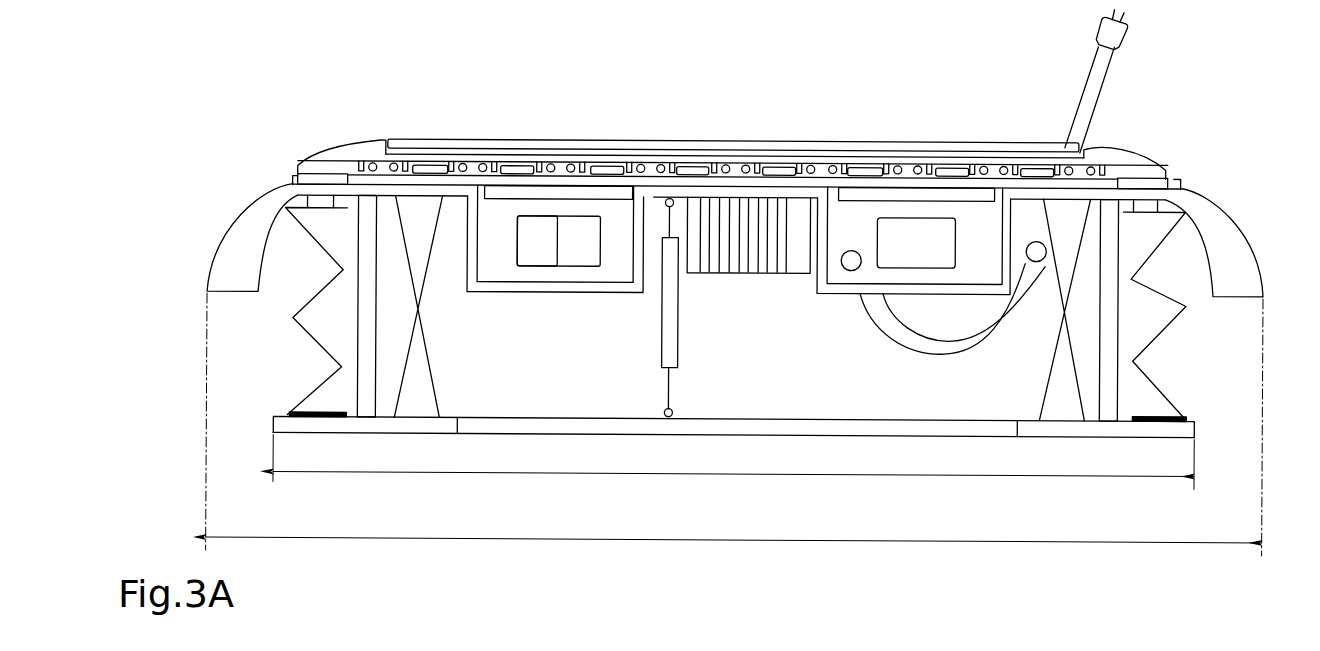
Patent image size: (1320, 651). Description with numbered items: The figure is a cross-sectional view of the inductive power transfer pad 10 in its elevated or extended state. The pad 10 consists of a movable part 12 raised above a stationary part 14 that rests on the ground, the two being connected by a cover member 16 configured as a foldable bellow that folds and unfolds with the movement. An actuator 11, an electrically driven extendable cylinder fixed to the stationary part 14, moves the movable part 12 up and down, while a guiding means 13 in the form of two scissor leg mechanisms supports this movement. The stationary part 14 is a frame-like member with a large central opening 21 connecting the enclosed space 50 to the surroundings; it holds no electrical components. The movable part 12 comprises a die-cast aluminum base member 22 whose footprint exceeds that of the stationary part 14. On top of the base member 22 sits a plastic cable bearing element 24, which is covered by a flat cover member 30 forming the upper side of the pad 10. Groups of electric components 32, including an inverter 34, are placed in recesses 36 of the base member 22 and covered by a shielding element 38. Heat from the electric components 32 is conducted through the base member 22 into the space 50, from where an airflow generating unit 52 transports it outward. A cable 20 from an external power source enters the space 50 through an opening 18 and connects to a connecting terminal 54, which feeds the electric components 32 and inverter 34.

The inductive power transfer pad 10 is at (1194, 78).
The actuator 11 is at (679, 310).
The movable part 12 is at (1213, 204).
The guiding means 13 is at (421, 283).
The stationary part 14 is at (1188, 418).
The cover member 16 is at (309, 341).
The opening 18 is at (1027, 244).
The cable 20 is at (1081, 100).
The central opening 21 is at (601, 447).
The base member 22 is at (1232, 262).
The cable bearing element 24 is at (357, 152).
The flat cover member 30 is at (312, 176).
The electric components 32 is at (582, 262).
The inverter 34 is at (535, 262).
The recesses 36 is at (470, 186).
The shielding element 38 is at (507, 190).
The space 50 is at (332, 229).
The airflow generating unit 52 is at (795, 276).
The connecting terminal 54 is at (849, 270).